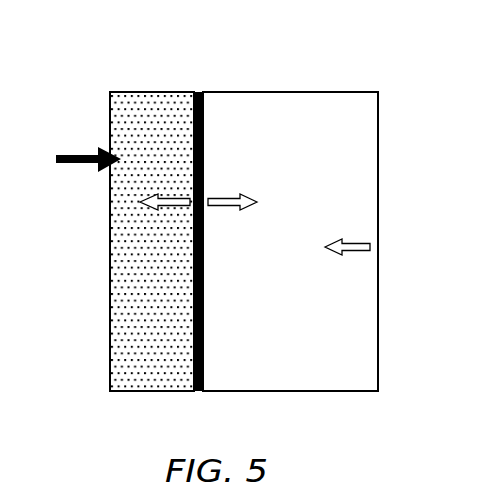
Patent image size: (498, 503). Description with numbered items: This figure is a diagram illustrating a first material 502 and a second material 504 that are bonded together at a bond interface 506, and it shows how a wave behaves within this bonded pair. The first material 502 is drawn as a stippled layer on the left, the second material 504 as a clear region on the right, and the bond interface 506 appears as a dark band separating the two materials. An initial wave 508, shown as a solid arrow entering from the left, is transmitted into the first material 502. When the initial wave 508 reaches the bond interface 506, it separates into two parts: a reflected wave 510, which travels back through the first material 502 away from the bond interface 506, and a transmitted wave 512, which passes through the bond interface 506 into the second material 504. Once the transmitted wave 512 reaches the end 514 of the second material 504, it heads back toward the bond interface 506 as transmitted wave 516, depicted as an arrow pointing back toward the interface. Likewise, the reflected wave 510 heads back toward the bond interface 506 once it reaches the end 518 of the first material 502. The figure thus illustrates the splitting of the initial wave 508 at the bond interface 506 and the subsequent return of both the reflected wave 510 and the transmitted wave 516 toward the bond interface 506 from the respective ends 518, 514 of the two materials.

The first material 502 is at (136, 401).
The second material 504 is at (308, 401).
The bond interface 506 is at (195, 83).
The initial wave 508 is at (65, 144).
The reflected wave 510 is at (165, 198).
The transmitted wave 512 is at (231, 198).
The end 514 is at (378, 287).
The transmitted wave 516 is at (350, 255).
The end 518 is at (110, 285).